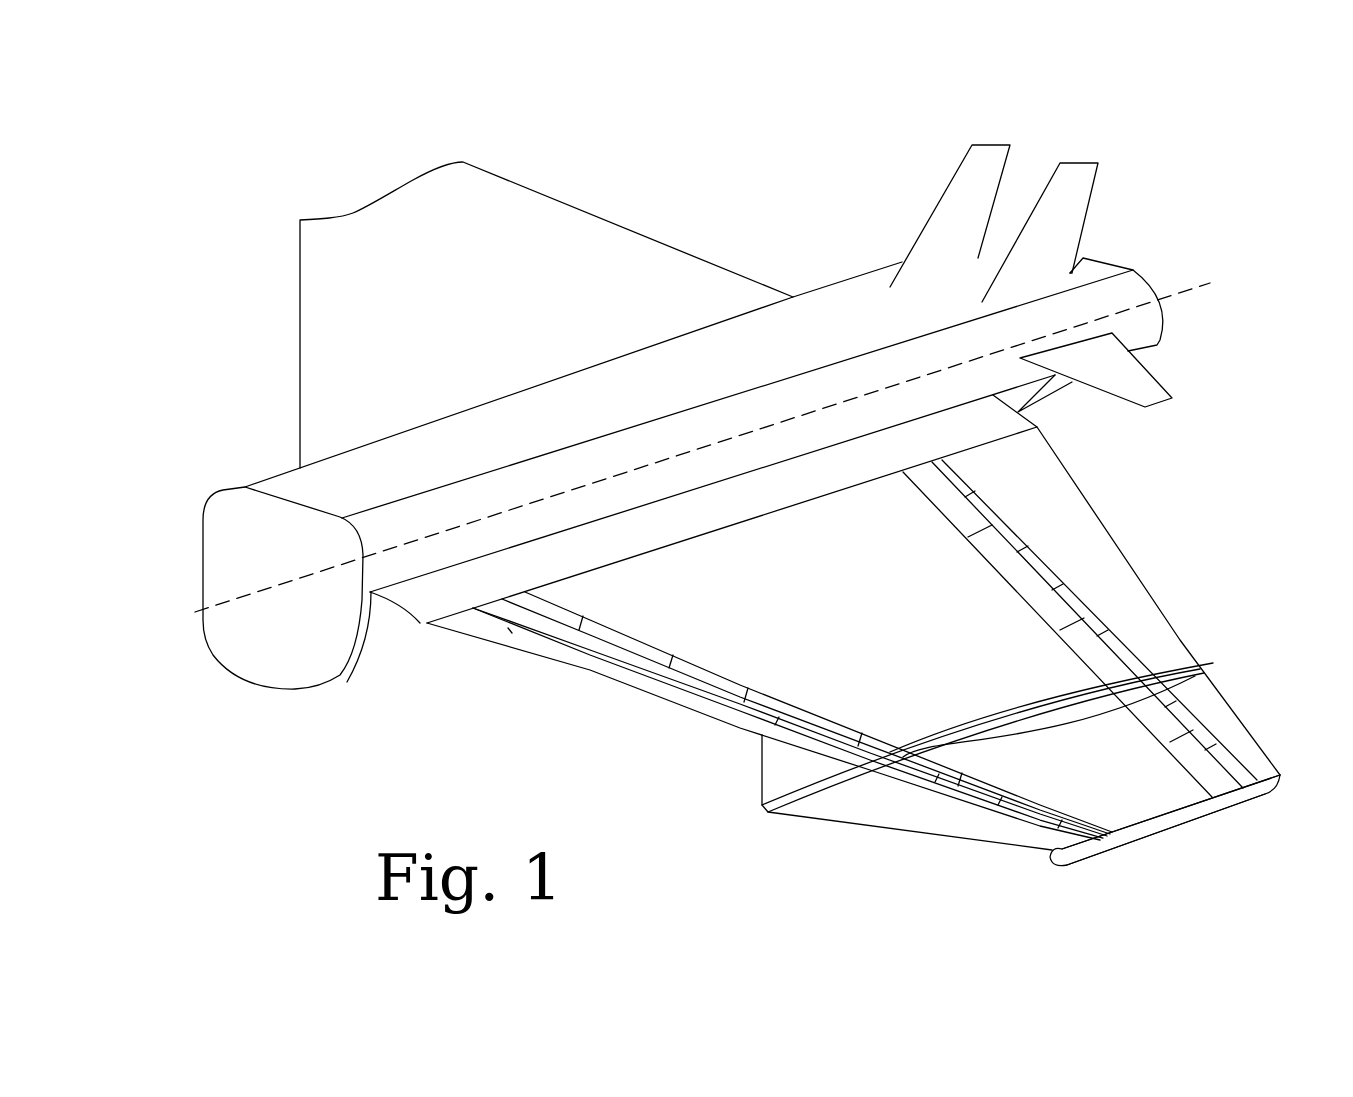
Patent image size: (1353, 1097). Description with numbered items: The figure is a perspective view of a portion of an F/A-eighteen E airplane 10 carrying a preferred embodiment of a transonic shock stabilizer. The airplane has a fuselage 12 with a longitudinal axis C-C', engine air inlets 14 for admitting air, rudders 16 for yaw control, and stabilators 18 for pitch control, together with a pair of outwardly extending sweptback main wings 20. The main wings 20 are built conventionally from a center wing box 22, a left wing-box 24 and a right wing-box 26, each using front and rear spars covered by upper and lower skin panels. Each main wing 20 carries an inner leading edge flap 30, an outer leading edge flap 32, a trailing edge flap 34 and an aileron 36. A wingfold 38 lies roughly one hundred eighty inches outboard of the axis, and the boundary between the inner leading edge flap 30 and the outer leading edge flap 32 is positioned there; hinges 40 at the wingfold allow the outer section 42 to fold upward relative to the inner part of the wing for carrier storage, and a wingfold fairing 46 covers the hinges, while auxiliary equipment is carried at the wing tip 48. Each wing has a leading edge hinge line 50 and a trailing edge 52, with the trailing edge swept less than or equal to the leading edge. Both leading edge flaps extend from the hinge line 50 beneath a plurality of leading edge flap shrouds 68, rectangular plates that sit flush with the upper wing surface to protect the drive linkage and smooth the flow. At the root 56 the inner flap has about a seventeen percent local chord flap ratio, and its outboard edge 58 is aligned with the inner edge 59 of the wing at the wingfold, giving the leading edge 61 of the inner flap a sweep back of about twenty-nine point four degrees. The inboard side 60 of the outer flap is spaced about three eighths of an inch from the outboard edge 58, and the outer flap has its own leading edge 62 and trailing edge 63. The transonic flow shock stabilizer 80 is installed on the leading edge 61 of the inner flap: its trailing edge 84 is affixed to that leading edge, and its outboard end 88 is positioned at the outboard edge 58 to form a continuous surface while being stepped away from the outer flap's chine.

The airplane 10 is at (522, 126).
The fuselage 12 is at (222, 484).
The engine air inlets 14 is at (378, 640).
The rudders 16 is at (1024, 250).
The stabilators 18 is at (1126, 380).
The main wings 20 is at (516, 254).
The center wing box 22 is at (598, 540).
The left wing-box 24 is at (643, 586).
The right wing-box 26 is at (602, 266).
The inner leading edge flap 30 is at (582, 669).
The outer leading edge flap 32 is at (957, 823).
The trailing edge flap 34 is at (1104, 557).
The aileron 36 is at (1228, 718).
The wingfold 38 is at (987, 737).
The hinges 40 is at (951, 742).
The outer section 42 is at (1126, 773).
The wingfold fairing 46 is at (1014, 741).
The wing tip 48 is at (1124, 834).
The leading edge hinge line 50 is at (669, 686).
The trailing edge 52 is at (1098, 508).
The root 56 is at (556, 597).
The outboard edge 58 is at (890, 772).
The inner edge 59 is at (1041, 714).
The inboard side 60 is at (833, 795).
The leading edge 61 is at (702, 721).
The leading edge 62 is at (930, 836).
The trailing edge 63 is at (1022, 811).
The leading edge flap shrouds 68 is at (562, 606).
The transonic flow shock stabilizer 80 is at (782, 772).
The stabilizer trailing edge 84 is at (770, 752).
The outboard end 88 is at (770, 800).